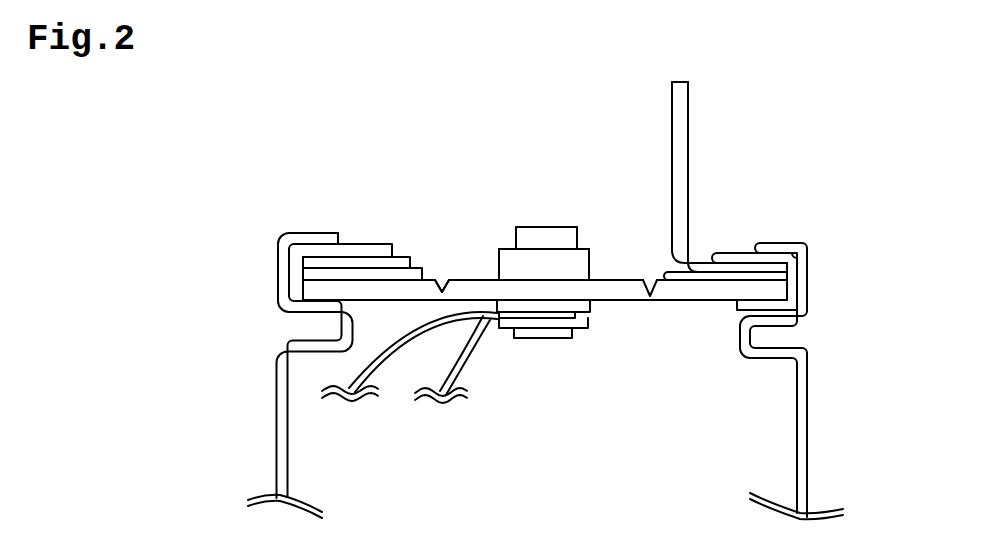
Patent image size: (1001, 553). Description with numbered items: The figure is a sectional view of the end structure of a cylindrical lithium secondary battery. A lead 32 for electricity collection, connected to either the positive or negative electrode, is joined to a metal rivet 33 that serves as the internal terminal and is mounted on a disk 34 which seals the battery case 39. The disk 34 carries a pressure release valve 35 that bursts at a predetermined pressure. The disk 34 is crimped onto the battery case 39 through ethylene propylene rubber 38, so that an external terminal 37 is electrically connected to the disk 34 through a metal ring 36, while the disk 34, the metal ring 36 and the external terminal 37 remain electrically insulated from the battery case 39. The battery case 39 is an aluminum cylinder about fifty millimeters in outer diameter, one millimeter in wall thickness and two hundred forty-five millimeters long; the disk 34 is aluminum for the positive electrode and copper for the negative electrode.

The lead 32 is at (450, 378).
The metal rivet 33 is at (562, 338).
The disk 34 is at (695, 292).
The pressure release valve 35 is at (442, 290).
The metal ring 36 is at (783, 281).
The external terminal 37 is at (688, 193).
The ethylene propylene rubber 38 is at (792, 257).
The battery case 39 is at (806, 397).